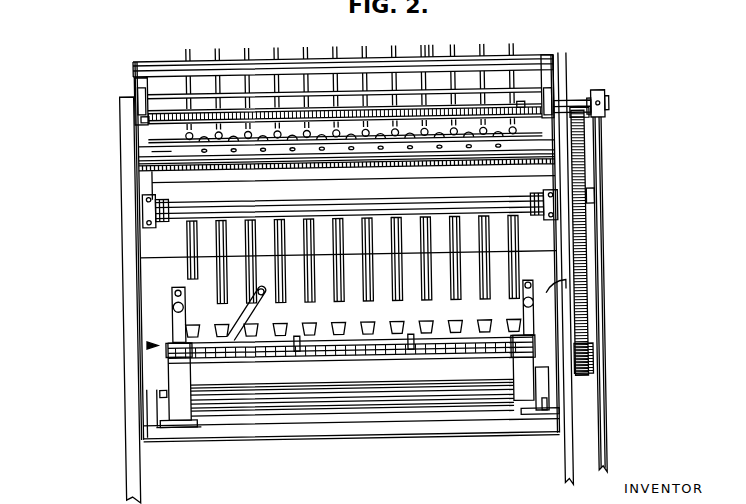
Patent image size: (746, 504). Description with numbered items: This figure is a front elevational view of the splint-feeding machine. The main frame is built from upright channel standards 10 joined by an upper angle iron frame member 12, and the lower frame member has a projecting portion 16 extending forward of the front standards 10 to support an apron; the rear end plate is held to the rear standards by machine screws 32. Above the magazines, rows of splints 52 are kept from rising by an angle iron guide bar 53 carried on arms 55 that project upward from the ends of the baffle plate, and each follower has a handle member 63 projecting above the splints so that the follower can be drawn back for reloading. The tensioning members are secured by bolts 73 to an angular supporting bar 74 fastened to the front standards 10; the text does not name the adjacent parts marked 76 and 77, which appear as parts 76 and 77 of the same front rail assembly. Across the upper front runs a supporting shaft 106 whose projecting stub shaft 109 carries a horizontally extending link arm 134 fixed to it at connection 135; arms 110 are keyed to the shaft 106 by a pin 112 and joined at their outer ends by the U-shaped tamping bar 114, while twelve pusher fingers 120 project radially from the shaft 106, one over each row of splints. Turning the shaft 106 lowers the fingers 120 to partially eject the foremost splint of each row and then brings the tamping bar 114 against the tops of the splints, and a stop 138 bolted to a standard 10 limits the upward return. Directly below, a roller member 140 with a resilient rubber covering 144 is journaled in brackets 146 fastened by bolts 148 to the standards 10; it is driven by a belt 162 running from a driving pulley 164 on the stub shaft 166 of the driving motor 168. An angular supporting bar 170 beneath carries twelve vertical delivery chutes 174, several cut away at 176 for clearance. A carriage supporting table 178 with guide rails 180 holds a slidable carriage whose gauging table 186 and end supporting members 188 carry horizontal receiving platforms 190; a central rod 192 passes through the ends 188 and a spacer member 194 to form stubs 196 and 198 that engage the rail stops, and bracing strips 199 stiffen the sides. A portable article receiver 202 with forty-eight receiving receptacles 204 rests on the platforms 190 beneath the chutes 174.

The upright supporting channel standards 10 is at (133, 142).
The upper angle iron frame member 12 is at (135, 185).
The projecting portion of lower frame member 16 is at (330, 437).
The machine screws 32 is at (604, 310).
The splint 52 is at (332, 124).
The angle iron guide bar 53 is at (262, 96).
The arms 55 is at (146, 97).
The handle member 63 is at (483, 42).
The bolts 73 is at (157, 150).
The angular supporting bar 74 is at (546, 142).
The rail 76 is at (559, 163).
The rail with holes 77 is at (549, 153).
The supporting shaft 106 is at (143, 120).
The stub shaft 109 is at (624, 108).
The arms 110 is at (138, 87).
The pin 112 is at (137, 122).
The tamping bar 114 is at (152, 66).
The pusher fingers 120 is at (452, 97).
The link arm 134 is at (213, 0).
The connection of link rod to link arm 135 is at (628, 90).
The stop 138 is at (148, 20).
The roller member 140 is at (157, 226).
The resilient rubber covering 144 is at (177, 218).
The brackets 146 is at (132, 210).
The bolts 148 is at (140, 200).
The driving belt 162 is at (584, 293).
The driving pulley 164 is at (586, 175).
The stub shaft of driving motor 166 is at (594, 195).
The driving motor 168 is at (546, 288).
The angular supporting bar 170 is at (521, 252).
The delivery chutes 174 is at (188, 271).
The cut-away portion of chutes 176 is at (172, 288).
The carriage supporting table 178 is at (140, 412).
The guide rails 180 is at (162, 427).
The gauging table 186 is at (222, 415).
The end supporting members 188 is at (183, 377).
The horizontal receiving platforms 190 is at (168, 352).
The rod 192 is at (338, 383).
The spacer member 194 is at (543, 402).
The stub 196 is at (160, 393).
The stub 198 is at (551, 388).
The bracing strips 199 is at (273, 362).
The portable article receiver 202 is at (147, 345).
The receiving receptacles 204 is at (289, 325).